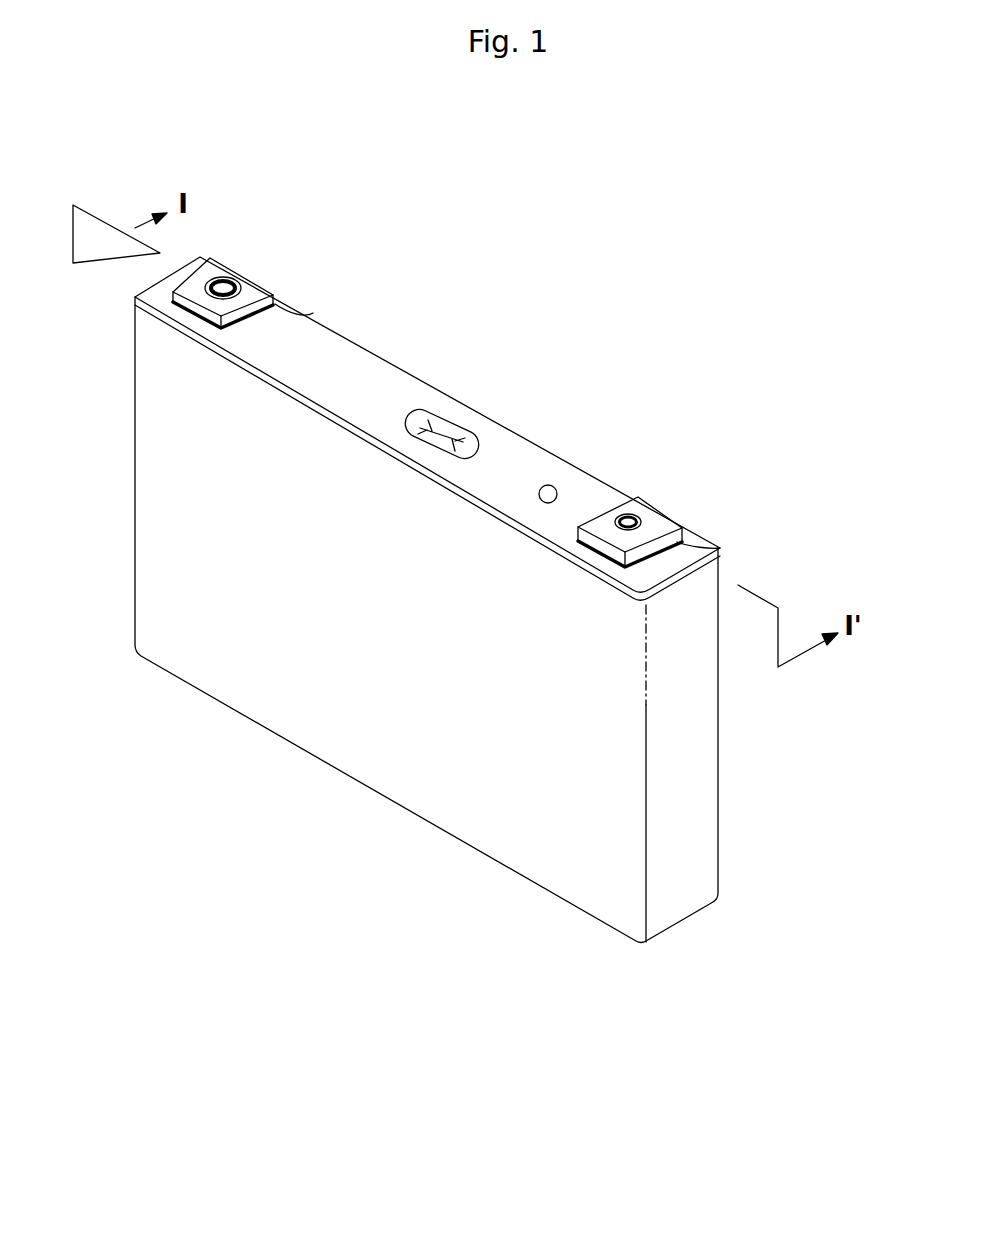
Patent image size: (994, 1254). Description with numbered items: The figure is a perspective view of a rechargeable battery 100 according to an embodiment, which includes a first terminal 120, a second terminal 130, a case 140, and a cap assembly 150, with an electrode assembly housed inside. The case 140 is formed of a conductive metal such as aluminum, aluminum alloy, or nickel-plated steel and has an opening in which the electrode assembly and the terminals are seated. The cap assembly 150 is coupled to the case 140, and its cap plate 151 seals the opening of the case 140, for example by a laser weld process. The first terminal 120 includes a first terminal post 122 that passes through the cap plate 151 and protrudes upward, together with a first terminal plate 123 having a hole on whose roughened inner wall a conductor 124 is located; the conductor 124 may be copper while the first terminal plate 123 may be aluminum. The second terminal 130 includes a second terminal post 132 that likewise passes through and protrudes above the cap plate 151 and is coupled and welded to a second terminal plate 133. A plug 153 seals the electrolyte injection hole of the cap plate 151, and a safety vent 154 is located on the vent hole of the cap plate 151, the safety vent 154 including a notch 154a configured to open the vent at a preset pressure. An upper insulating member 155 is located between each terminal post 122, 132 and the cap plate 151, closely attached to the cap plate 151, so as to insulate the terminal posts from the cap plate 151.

The rechargeable battery 100 is at (748, 202).
The first terminal 120 is at (269, 224).
The first terminal post 122 is at (232, 239).
The first terminal plate 123 is at (262, 288).
The conductor 124 is at (241, 287).
The second terminal 130 is at (675, 460).
The second terminal post 132 is at (636, 473).
The second terminal plate 133 is at (667, 518).
The case 140 is at (364, 767).
The cap assembly 150 is at (427, 424).
The cap plate 151 is at (345, 345).
The plug 153 is at (548, 484).
The safety vent 154 is at (475, 387).
The notch 154a is at (450, 437).
The upper insulating member 155 is at (313, 313).